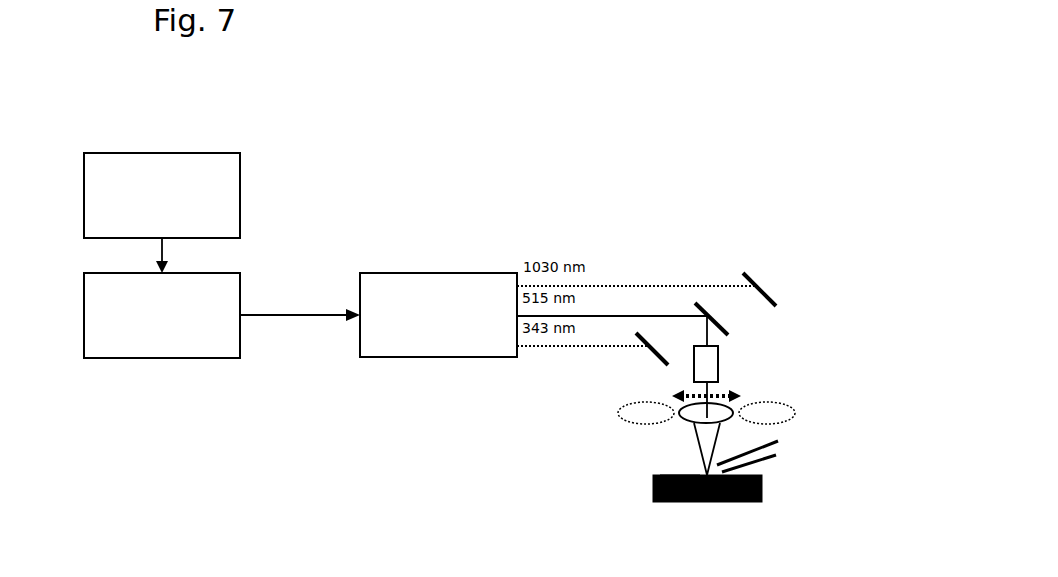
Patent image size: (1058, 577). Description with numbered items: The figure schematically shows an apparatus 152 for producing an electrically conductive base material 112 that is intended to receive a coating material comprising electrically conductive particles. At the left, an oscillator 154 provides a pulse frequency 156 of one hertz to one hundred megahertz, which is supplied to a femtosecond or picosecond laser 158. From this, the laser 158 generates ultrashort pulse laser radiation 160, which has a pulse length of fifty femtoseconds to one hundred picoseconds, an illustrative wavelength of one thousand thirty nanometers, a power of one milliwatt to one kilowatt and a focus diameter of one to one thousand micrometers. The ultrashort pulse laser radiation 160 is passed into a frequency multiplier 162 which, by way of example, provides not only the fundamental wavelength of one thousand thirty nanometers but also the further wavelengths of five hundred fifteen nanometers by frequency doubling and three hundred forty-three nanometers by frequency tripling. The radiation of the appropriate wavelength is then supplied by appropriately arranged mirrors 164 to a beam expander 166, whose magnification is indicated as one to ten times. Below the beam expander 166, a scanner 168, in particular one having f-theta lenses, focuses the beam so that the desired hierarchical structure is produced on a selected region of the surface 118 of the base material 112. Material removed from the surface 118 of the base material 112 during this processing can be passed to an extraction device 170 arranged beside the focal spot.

The electrically conductive base material 112 is at (762, 490).
The surface of the base material 118 is at (677, 475).
The apparatus 152 is at (632, 218).
The oscillator 154 is at (162, 195).
The pulse frequency 156 is at (160, 250).
The femtosecond or picosecond laser 158 is at (162, 315).
The ultrashort pulse laser radiation 160 is at (293, 317).
The frequency multiplier 162 is at (438, 315).
The mirrors 164 is at (655, 350).
The beam expander 166 is at (710, 358).
The scanner 168 is at (741, 394).
The extraction device 170 is at (778, 450).